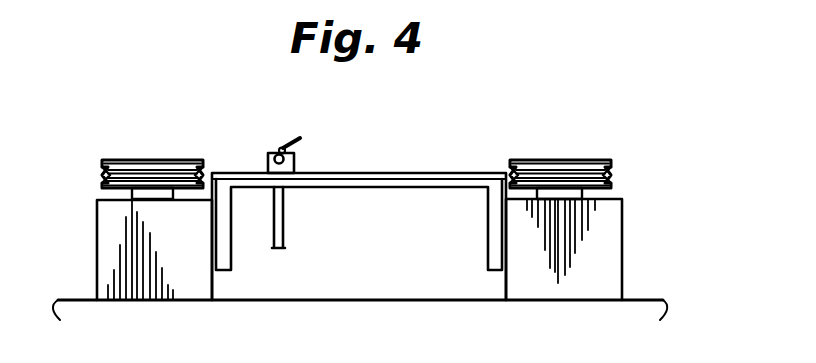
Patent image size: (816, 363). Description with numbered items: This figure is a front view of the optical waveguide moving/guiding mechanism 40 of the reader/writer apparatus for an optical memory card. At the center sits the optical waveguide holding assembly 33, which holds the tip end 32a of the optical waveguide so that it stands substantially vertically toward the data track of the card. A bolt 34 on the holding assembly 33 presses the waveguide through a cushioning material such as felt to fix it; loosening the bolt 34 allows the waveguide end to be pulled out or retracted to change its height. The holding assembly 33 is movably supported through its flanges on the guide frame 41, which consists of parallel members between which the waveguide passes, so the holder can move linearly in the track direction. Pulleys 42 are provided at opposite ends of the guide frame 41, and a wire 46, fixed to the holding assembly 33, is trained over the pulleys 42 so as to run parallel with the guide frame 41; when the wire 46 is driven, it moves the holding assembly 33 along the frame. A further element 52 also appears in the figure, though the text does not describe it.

The tip end of optical waveguide 32a is at (300, 138).
The optical waveguide holding assembly 33 is at (294, 162).
The bolt 34 is at (274, 152).
The optical waveguide moving/guiding mechanism 40 is at (455, 169).
The guide frame 41 is at (412, 170).
The pulley 42 is at (153, 160).
The wire 46 is at (103, 176).
The pin 52 is at (283, 218).